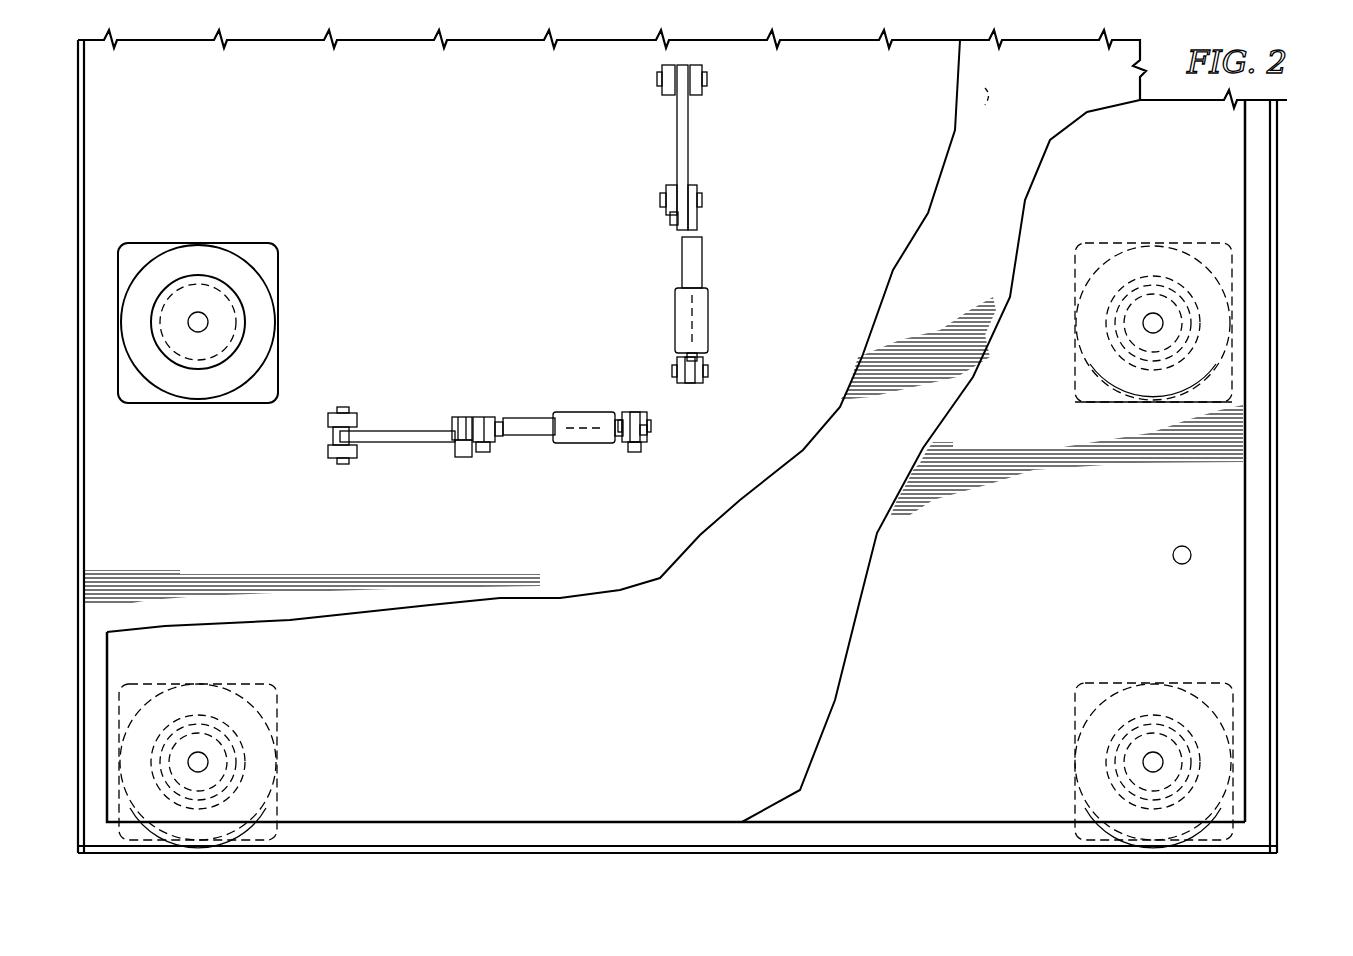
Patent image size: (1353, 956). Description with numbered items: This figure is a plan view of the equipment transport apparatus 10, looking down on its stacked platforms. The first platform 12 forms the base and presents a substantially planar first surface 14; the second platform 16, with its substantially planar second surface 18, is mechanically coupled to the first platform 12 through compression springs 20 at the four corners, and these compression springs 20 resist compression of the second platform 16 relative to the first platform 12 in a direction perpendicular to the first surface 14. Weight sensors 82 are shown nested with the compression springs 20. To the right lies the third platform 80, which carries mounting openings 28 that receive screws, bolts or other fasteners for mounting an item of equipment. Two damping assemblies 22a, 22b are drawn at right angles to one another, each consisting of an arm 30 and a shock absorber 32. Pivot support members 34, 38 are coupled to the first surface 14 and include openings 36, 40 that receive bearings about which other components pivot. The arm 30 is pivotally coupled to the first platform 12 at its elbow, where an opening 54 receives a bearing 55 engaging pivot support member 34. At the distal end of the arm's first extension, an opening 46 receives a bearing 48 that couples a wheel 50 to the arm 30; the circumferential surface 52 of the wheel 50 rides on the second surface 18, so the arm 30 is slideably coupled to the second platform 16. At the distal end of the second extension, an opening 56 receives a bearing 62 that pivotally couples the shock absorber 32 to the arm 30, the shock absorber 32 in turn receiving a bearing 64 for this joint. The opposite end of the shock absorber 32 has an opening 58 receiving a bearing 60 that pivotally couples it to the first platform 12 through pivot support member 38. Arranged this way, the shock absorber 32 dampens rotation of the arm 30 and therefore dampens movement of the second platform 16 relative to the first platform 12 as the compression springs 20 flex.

The equipment transport apparatus 10 is at (1297, 152).
The first platform 12 is at (1262, 246).
The first surface 14 is at (326, 141).
The second platform 16 is at (965, 203).
The second surface 18 is at (996, 97).
The compression spring 20 is at (177, 277).
The damping assembly 22a is at (485, 347).
The damping assembly 22b is at (778, 221).
The mounting opening 28 is at (1174, 557).
The arm 30 is at (385, 455).
The shock absorber 32 is at (585, 444).
The pivot support member 34 is at (455, 445).
The opening 36 is at (462, 417).
The pivot support member 38 is at (648, 418).
The opening 40 is at (637, 412).
The opening 46 is at (329, 433).
The bearing 48 is at (342, 408).
The wheel 50 is at (329, 452).
The circumferential surface 52 is at (342, 463).
The opening 54 is at (452, 422).
The bearing 55 is at (462, 457).
The opening 56 is at (498, 441).
The opening 58 is at (648, 430).
The bearing 60 is at (637, 452).
The bearing 62 is at (483, 417).
The bearing 64 is at (483, 452).
The third platform 80 is at (1131, 168).
The weight sensor 82 is at (217, 303).